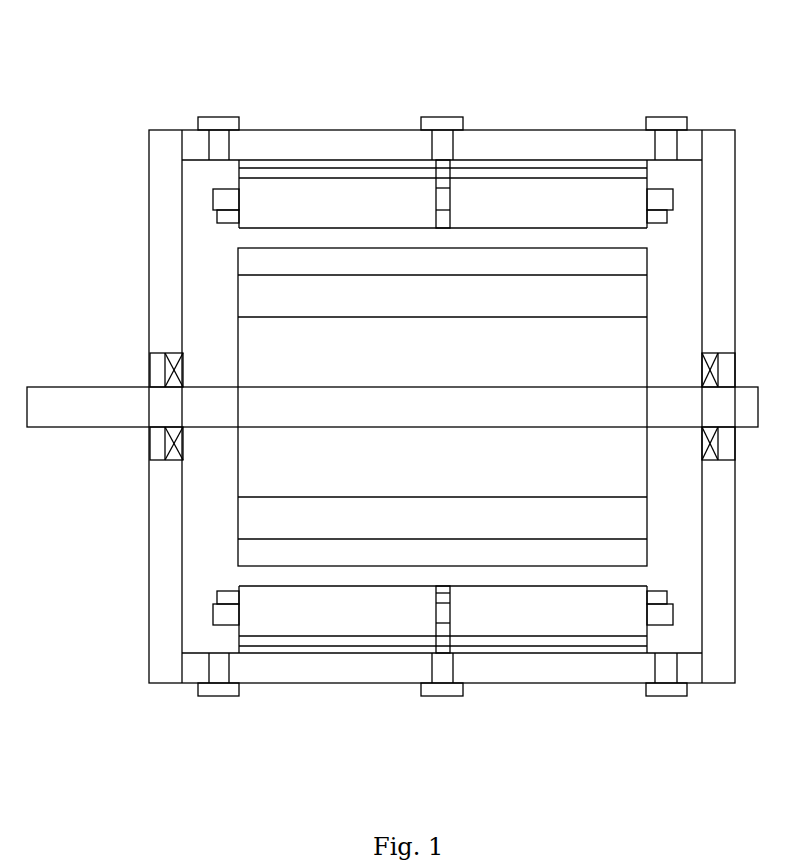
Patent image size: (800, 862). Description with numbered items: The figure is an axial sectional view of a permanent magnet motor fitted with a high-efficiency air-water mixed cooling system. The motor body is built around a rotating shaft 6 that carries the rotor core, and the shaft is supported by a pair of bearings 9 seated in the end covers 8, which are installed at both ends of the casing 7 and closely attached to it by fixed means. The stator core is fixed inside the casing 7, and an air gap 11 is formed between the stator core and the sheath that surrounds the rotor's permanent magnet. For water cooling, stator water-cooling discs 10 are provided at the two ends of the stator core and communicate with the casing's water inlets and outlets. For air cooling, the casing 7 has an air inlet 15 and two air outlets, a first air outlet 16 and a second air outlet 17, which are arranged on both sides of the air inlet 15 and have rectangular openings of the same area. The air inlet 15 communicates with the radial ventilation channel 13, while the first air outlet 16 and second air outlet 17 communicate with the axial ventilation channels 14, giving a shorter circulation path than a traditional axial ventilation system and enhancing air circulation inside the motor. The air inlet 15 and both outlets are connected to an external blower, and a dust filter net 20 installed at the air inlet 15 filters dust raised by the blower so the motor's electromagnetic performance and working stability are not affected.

The rotating shaft 6 is at (115, 412).
The casing 7 is at (515, 668).
The end cover 8 is at (723, 668).
The bearing 9 is at (167, 367).
The stator water-cooling disc 10 is at (647, 625).
The air gap 11 is at (273, 578).
The radial ventilation channel 13 is at (442, 640).
The axial ventilation channel 14 is at (542, 167).
The air inlet 15 is at (428, 115).
The first air outlet 16 is at (223, 115).
The second air outlet 17 is at (665, 115).
The dust filter net 20 is at (449, 117).